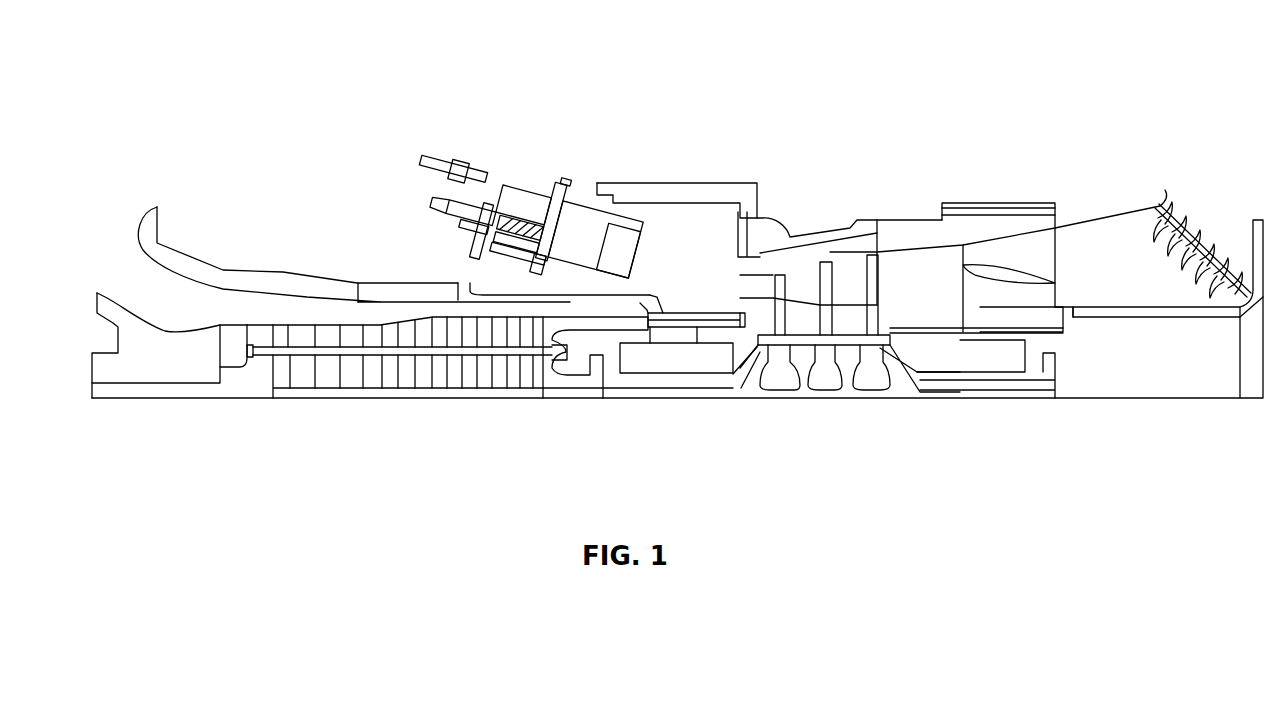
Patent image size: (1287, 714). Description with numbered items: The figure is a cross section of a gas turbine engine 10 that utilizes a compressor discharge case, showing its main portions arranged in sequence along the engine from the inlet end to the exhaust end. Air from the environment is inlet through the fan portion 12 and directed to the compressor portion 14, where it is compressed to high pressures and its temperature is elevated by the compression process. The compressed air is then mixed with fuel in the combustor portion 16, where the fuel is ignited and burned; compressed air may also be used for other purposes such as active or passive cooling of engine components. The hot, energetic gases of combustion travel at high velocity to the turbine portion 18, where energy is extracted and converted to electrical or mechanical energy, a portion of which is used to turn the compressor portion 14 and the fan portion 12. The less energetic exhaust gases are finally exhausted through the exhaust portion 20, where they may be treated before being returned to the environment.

The gas turbine engine 10 is at (690, 131).
The fan portion 12 is at (130, 283).
The compressor portion 14 is at (353, 313).
The combustor portion 16 is at (594, 222).
The turbine portion 18 is at (877, 240).
The exhaust portion 20 is at (1140, 257).